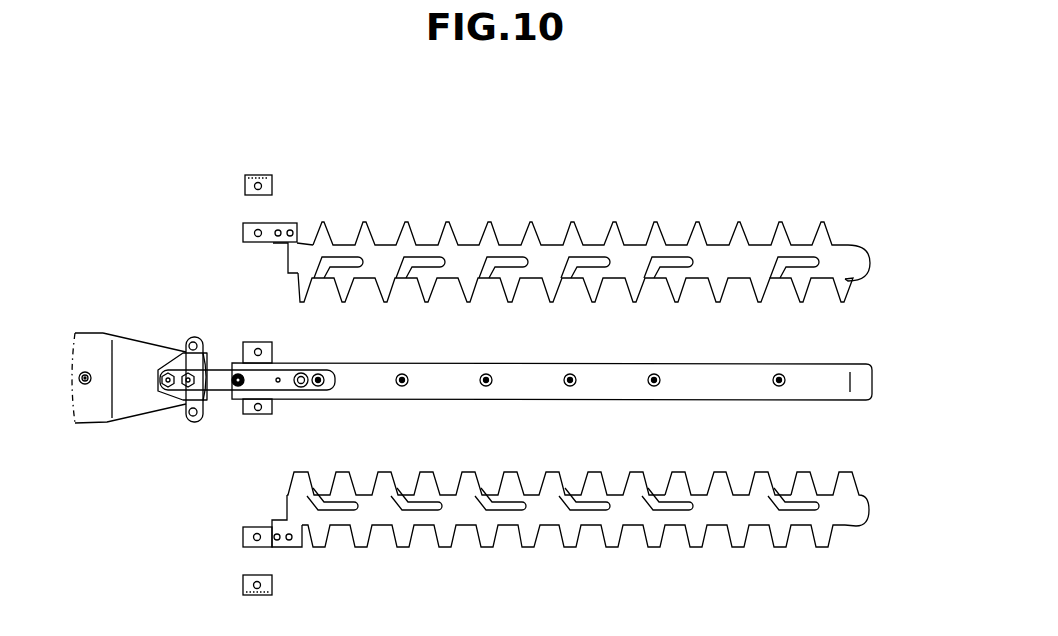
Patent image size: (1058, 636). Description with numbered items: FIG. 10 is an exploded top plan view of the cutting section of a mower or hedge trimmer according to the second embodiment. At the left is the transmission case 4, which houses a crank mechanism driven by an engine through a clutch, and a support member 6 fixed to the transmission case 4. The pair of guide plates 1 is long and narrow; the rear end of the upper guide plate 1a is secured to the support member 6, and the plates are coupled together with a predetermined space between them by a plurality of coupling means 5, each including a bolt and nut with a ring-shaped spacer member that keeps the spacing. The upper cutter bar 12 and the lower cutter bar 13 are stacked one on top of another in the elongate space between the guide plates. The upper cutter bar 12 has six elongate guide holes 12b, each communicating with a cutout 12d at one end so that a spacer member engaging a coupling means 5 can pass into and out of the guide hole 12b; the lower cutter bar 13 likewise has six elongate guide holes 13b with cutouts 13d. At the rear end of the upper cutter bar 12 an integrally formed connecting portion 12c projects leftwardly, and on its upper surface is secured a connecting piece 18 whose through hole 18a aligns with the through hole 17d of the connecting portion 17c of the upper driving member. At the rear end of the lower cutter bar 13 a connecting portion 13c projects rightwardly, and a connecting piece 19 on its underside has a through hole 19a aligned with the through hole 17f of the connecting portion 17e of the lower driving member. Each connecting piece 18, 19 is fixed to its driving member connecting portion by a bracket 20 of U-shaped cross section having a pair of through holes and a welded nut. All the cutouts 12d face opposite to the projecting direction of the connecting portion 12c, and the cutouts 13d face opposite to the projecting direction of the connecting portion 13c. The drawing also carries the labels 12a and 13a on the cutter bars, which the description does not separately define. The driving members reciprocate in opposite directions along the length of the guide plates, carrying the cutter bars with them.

The pair of guide plates 1 is at (875, 379).
The upper guide plate 1a is at (853, 378).
The transmission case 4 is at (130, 333).
The coupling means 5 is at (325, 376).
The support member 6 is at (215, 356).
The upper cutter bar 12 is at (554, 238).
The blade body portion 12a is at (722, 292).
The elongate guide holes 12b is at (340, 257).
The connecting portion 12c is at (308, 243).
The cutouts 12d is at (326, 268).
The lower cutter bar 13 is at (553, 529).
The blade body portion 13a is at (760, 474).
The elongate guide holes 13b is at (350, 511).
The connecting portion 13c is at (288, 548).
The cutouts 13d is at (318, 501).
The connecting portion of upper driving member 17c is at (257, 343).
The through hole 17d is at (260, 343).
The connecting portion of lower driving member 17e is at (243, 404).
The through hole 17f is at (258, 414).
The connecting piece 18 is at (272, 224).
The through hole 18a is at (246, 232).
The connecting piece 19 is at (245, 549).
The through hole 19a is at (244, 537).
The bracket 20 is at (264, 172).